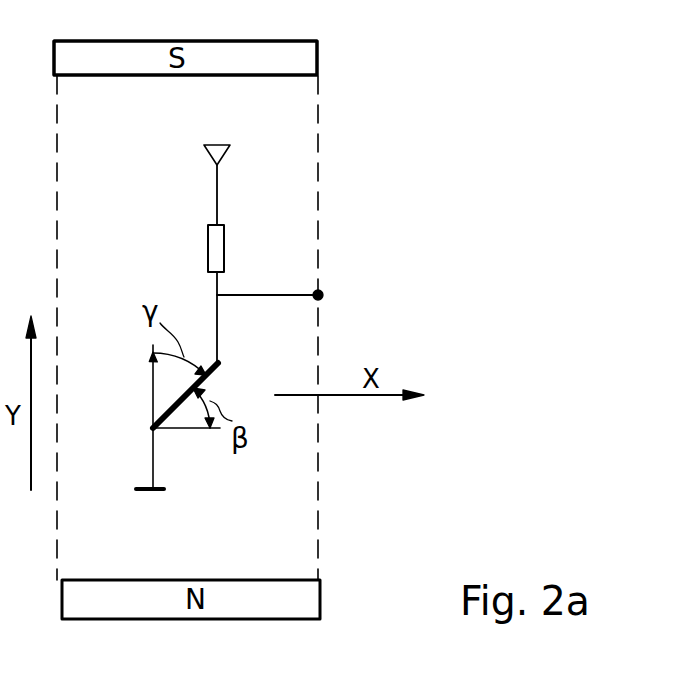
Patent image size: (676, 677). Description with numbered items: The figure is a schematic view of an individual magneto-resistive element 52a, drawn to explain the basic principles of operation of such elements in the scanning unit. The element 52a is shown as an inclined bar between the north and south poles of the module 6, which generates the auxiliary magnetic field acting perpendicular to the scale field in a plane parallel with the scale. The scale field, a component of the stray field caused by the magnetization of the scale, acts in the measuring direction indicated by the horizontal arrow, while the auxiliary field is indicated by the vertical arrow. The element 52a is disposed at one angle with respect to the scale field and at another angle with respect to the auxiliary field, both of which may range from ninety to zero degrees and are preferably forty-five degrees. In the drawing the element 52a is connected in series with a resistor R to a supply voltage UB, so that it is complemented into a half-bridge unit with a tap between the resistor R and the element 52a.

The module 6 is at (310, 57).
The magneto-resistive element 52a is at (219, 364).
The resistor R is at (224, 251).
The supply voltage UB is at (217, 145).